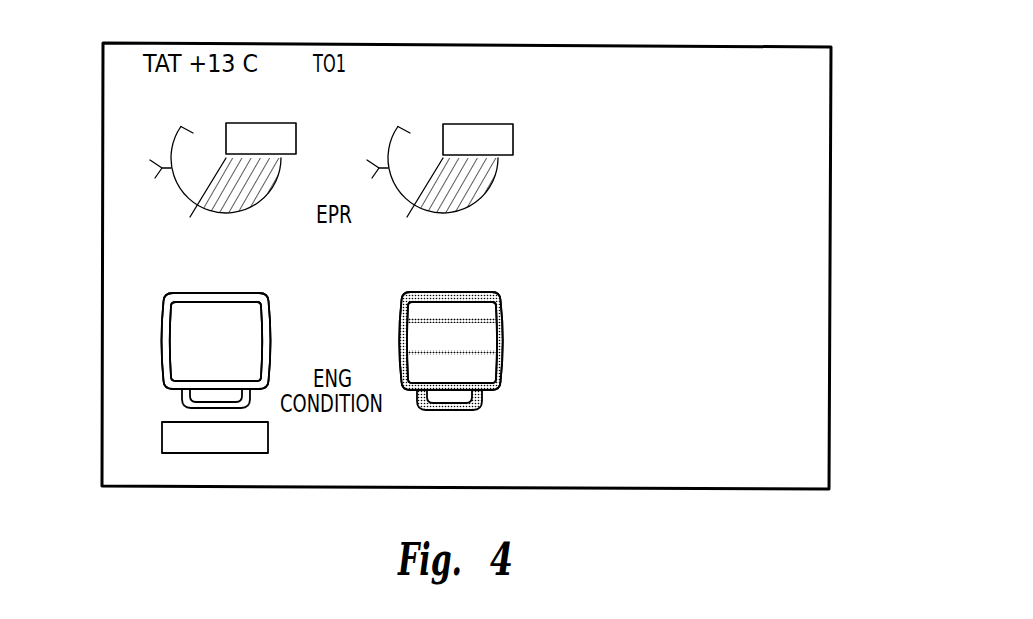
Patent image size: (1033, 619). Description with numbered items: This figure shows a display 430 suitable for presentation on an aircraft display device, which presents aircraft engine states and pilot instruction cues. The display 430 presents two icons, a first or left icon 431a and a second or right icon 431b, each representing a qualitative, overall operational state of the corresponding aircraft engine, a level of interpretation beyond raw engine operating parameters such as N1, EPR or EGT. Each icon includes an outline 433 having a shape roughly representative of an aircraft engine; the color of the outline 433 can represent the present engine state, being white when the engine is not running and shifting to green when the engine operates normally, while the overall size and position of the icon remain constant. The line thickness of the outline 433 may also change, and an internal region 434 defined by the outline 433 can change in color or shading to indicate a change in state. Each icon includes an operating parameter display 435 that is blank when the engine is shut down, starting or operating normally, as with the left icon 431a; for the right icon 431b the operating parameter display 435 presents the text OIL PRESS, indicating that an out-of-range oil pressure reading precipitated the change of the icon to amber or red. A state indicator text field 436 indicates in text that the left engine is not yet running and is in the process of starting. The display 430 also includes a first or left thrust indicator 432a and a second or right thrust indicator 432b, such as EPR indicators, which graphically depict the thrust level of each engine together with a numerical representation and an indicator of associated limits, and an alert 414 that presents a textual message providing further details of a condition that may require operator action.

The alert 414 is at (822, 72).
The display 430 is at (838, 397).
The first or left icon 431a is at (158, 297).
The second or right icon 431b is at (500, 283).
The first or left thrust indicator 432a is at (157, 198).
The second or right thrust indicator 432b is at (527, 108).
The outline 433 is at (272, 333).
The internal region 434 is at (219, 310).
The operating parameter display 435 is at (175, 350).
The state indicator text field 436 is at (162, 442).